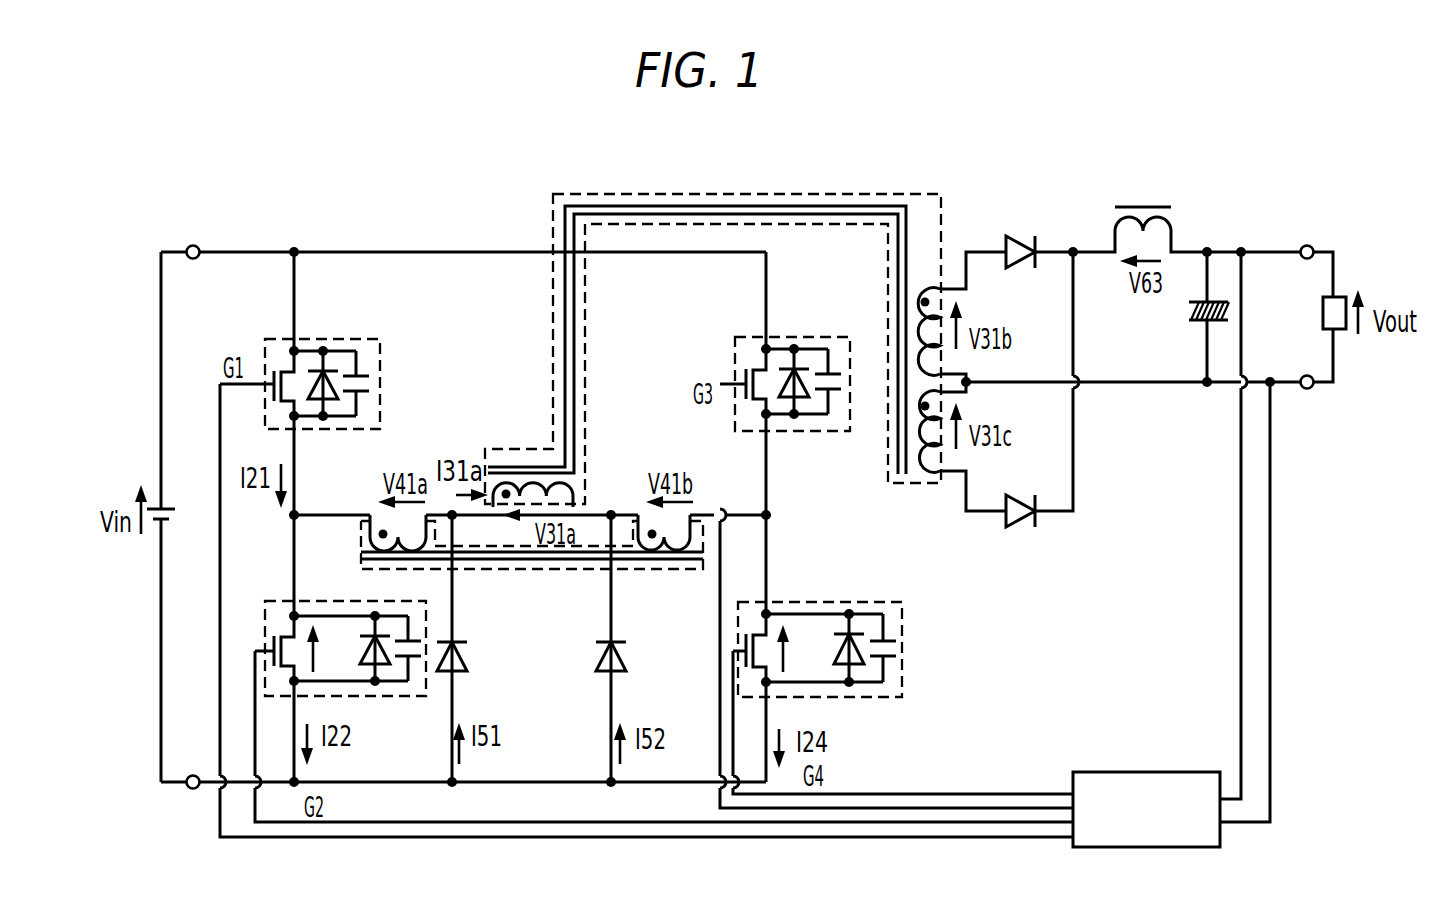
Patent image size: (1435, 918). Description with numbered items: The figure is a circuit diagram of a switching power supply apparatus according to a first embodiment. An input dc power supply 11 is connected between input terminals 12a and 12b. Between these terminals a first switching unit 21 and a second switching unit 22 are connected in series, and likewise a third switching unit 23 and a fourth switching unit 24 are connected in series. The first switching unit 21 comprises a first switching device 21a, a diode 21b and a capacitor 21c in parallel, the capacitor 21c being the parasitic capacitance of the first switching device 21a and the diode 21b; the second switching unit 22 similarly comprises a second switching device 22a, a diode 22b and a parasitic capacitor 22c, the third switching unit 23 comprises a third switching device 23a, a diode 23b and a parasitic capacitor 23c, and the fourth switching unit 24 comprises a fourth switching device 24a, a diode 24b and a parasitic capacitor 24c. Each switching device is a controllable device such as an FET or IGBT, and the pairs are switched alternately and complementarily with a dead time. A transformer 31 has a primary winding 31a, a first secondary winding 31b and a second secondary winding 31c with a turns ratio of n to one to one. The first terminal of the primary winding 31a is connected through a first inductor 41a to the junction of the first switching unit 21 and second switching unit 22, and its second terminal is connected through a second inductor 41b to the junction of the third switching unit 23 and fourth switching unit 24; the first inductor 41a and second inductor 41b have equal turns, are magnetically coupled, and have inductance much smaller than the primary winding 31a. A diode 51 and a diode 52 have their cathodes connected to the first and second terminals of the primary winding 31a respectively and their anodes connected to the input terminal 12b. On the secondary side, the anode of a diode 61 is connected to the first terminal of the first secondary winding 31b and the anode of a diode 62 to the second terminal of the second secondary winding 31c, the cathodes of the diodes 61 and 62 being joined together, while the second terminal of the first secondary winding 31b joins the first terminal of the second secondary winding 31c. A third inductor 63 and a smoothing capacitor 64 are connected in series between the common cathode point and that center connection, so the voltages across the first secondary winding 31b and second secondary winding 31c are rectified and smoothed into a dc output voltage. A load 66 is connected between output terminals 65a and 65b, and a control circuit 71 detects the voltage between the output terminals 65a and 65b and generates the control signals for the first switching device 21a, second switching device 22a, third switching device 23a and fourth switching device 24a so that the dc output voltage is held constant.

The input dc power supply 11 is at (165, 503).
The input terminal 12a is at (190, 241).
The input terminal 12b is at (190, 785).
The first switching unit 21 is at (277, 333).
The first switching device 21a is at (283, 362).
The diode 21b is at (325, 362).
The capacitor 21c is at (362, 372).
The second switching unit 22 is at (347, 596).
The second switching device 22a is at (285, 625).
The diode 22b is at (373, 670).
The capacitor 22c is at (407, 635).
The third switching unit 23 is at (792, 332).
The third switching device 23a is at (755, 360).
The diode 23b is at (796, 418).
The capacitor 23c is at (832, 400).
The fourth switching unit 24 is at (822, 597).
The fourth switching device 24a is at (758, 663).
The diode 24b is at (850, 680).
The capacitor 24c is at (890, 634).
The transformer 31 is at (834, 222).
The primary winding 31a is at (570, 480).
The first secondary winding 31b is at (938, 287).
The second secondary winding 31c is at (930, 470).
The first inductor 41a is at (378, 519).
The second inductor 41b is at (654, 565).
The diode 51 is at (465, 657).
The diode 52 is at (600, 648).
The diode 61 is at (1030, 241).
The diode 62 is at (1040, 510).
The third inductor 63 is at (1170, 230).
The smoothing capacitor 64 is at (1196, 318).
The output terminal 65a is at (1306, 241).
The output terminal 65b is at (1306, 385).
The load 66 is at (1338, 291).
The control circuit 71 is at (1135, 767).